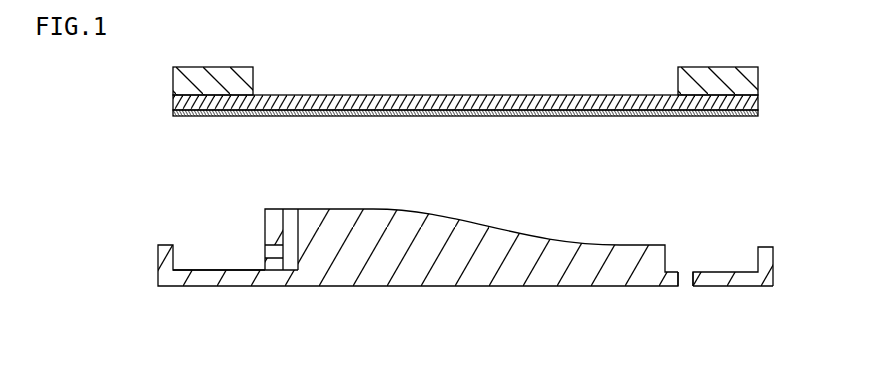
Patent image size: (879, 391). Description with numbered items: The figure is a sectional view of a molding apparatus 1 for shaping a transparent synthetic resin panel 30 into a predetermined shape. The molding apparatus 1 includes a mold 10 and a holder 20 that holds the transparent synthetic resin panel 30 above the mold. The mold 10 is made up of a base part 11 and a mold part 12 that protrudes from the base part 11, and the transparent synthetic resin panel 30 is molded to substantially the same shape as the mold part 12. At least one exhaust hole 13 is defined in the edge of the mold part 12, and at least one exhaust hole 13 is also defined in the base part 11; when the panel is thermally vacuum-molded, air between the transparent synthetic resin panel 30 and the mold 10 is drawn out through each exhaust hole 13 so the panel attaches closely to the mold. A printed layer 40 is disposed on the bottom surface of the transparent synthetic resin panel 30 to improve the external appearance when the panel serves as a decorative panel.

The molding apparatus 1 is at (449, 258).
The mold 10 is at (698, 340).
The base part 11 is at (700, 274).
The mold part 12 is at (623, 257).
The exhaust hole 13 is at (292, 268).
The holder 20 is at (757, 75).
The transparent synthetic resin panel 30 is at (758, 102).
The printed layer 40 is at (758, 114).